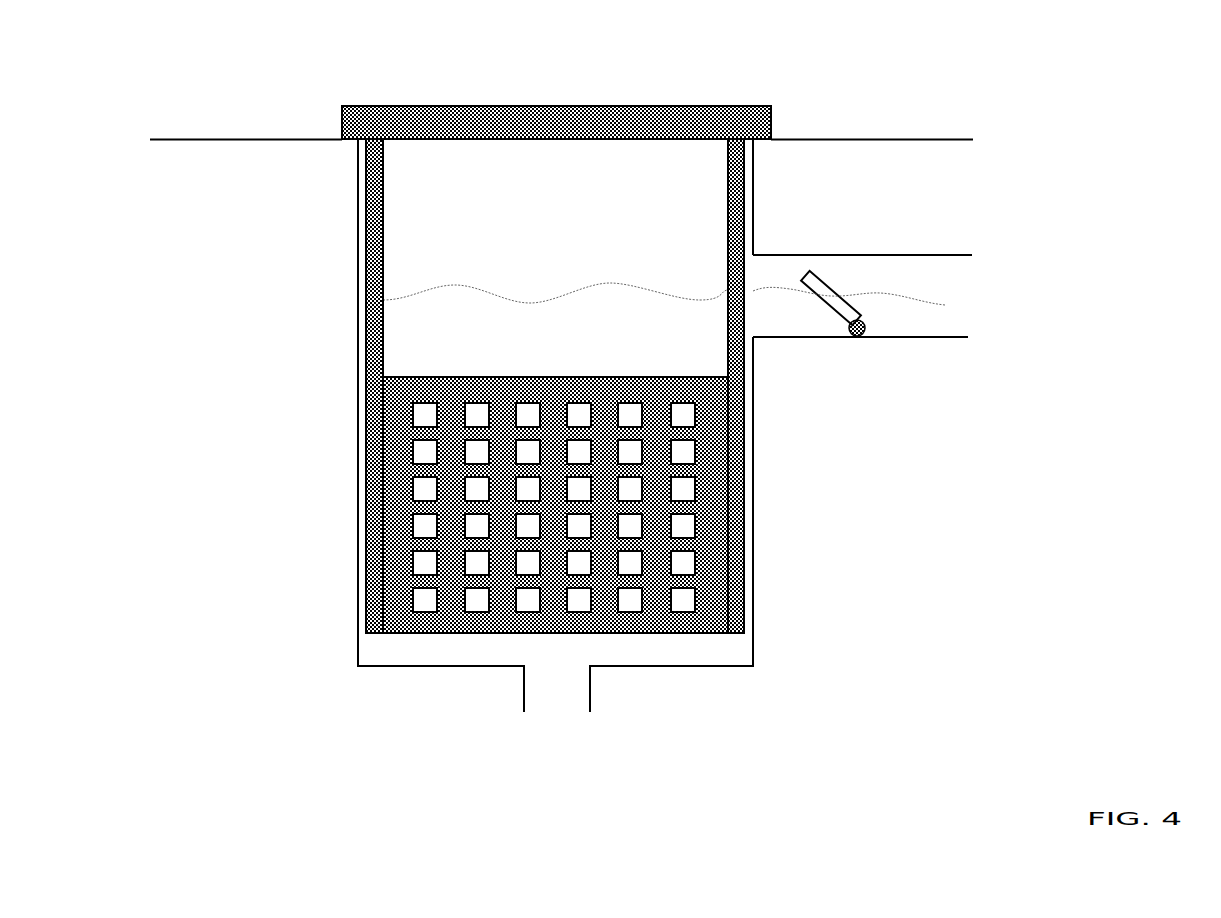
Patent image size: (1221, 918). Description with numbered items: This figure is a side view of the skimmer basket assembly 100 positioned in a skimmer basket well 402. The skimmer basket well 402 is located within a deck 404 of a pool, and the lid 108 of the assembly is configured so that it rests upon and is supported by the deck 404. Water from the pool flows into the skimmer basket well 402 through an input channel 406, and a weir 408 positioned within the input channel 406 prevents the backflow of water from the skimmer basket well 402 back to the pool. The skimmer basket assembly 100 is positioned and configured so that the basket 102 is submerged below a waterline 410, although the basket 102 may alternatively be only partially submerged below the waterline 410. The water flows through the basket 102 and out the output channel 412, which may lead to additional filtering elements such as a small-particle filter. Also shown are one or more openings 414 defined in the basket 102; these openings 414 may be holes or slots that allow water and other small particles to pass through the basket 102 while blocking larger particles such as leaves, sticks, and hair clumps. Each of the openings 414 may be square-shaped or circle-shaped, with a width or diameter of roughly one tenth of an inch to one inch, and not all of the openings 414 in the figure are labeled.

The skimmer basket assembly 100 is at (504, 83).
The basket 102 is at (397, 422).
The lid 108 is at (670, 123).
The skimmer basket well 402 is at (723, 652).
The deck 404 is at (240, 139).
The input channel 406 is at (933, 272).
The weir 408 is at (843, 318).
The waterline 410 is at (573, 292).
The output channel 412 is at (555, 692).
The openings 414 is at (422, 560).